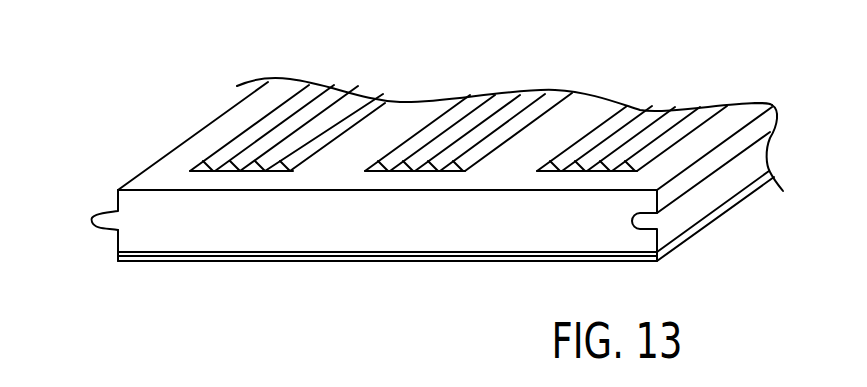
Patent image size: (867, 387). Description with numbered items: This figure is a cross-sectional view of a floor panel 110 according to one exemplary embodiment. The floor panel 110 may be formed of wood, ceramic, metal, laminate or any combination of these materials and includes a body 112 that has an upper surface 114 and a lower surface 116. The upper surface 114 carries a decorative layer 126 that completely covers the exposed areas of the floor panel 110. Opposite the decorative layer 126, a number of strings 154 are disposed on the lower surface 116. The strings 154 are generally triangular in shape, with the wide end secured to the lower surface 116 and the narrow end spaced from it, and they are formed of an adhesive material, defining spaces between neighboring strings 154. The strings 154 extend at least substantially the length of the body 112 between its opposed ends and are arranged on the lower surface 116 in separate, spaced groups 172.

The floor panel 110 is at (206, 282).
The body 112 is at (148, 213).
The upper surface 114 is at (140, 253).
The lower surface 116 is at (173, 163).
The decorative layer 126 is at (391, 262).
The strings 154 is at (312, 97).
The groups 172 is at (650, 110).